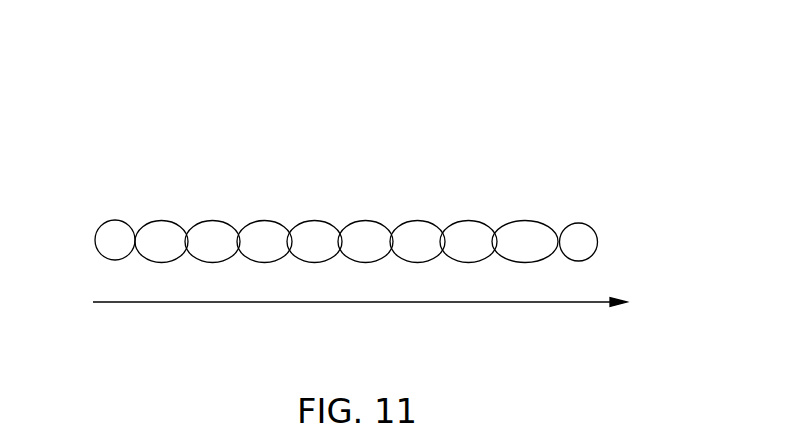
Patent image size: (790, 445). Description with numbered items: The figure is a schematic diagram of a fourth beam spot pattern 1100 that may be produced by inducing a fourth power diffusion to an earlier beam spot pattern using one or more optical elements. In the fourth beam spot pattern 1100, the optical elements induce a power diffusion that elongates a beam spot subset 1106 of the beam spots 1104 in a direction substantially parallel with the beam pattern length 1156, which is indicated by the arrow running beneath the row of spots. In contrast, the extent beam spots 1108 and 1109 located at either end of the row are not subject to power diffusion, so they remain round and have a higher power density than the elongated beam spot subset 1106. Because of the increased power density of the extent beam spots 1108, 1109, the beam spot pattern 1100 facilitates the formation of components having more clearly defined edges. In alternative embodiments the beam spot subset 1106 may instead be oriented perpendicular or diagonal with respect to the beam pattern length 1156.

The fourth beam spot pattern 1100 is at (371, 195).
The beam spots 1104 is at (605, 207).
The beam spot subset 1106 is at (565, 208).
The extent beam spots 1108 is at (575, 242).
The end link 1109 is at (115, 240).
The beam pattern length 1156 is at (542, 303).